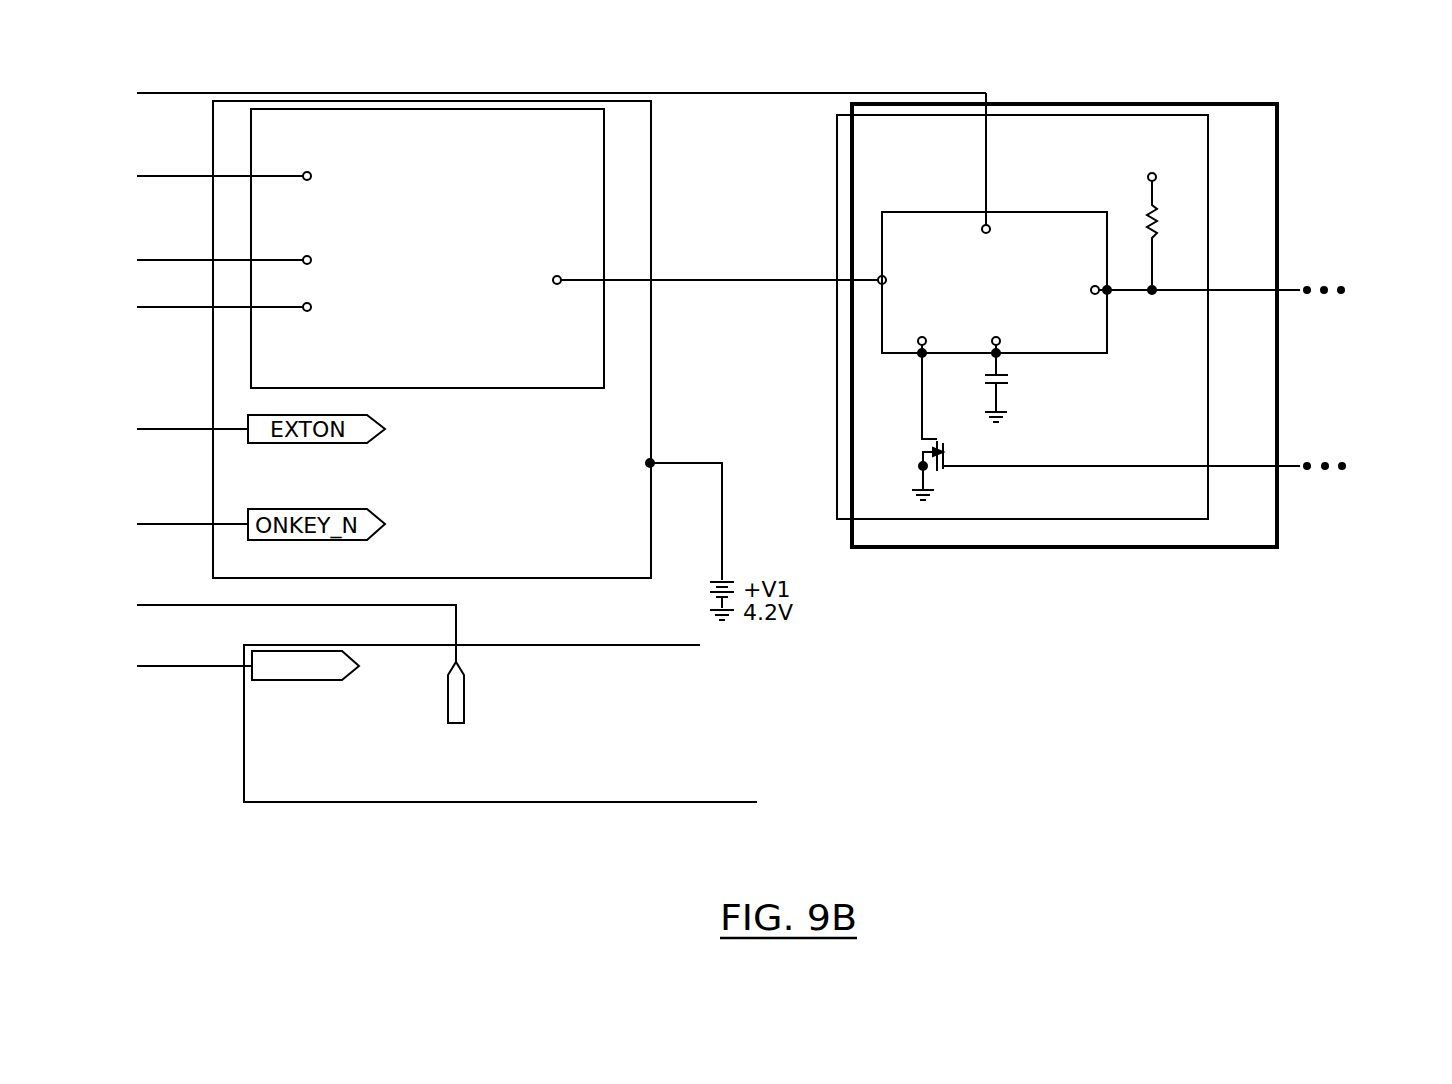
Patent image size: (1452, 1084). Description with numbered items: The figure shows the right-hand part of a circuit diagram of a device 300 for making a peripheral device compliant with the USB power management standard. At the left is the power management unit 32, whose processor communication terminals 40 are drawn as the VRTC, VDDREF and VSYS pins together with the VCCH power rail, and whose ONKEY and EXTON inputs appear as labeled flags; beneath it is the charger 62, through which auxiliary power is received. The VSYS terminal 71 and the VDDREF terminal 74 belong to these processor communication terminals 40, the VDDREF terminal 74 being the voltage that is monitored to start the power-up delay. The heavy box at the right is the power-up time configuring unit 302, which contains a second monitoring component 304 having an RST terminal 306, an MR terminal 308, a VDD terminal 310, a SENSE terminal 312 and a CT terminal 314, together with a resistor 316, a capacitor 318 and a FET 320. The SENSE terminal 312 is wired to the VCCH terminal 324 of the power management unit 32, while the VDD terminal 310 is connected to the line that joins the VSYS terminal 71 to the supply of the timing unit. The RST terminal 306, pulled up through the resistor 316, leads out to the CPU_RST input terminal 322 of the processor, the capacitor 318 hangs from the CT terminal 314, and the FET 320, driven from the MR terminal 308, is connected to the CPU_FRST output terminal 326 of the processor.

The power management unit 32 is at (651, 185).
The processor communication terminals 40 is at (251, 143).
The charger 62 is at (510, 800).
The VSYS terminal 71 is at (348, 320).
The VDDREF terminal 74 is at (355, 262).
The device 300 is at (922, 760).
The power-up time configuring unit 302 is at (1127, 562).
The second monitoring component 304 is at (1108, 340).
The RST terminal 306 is at (1085, 255).
The MR terminal 308 is at (920, 360).
The VDD terminal 310 is at (982, 224).
The SENSE terminal 312 is at (878, 275).
The CT terminal 314 is at (1003, 350).
The resistor 316 is at (1207, 195).
The capacitor 318 is at (1005, 393).
The FET 320 is at (938, 479).
The CPU_RST input terminal 322 is at (1360, 332).
The VCCH terminal 324 is at (557, 291).
The CPU_FRST output terminal 326 is at (1361, 523).